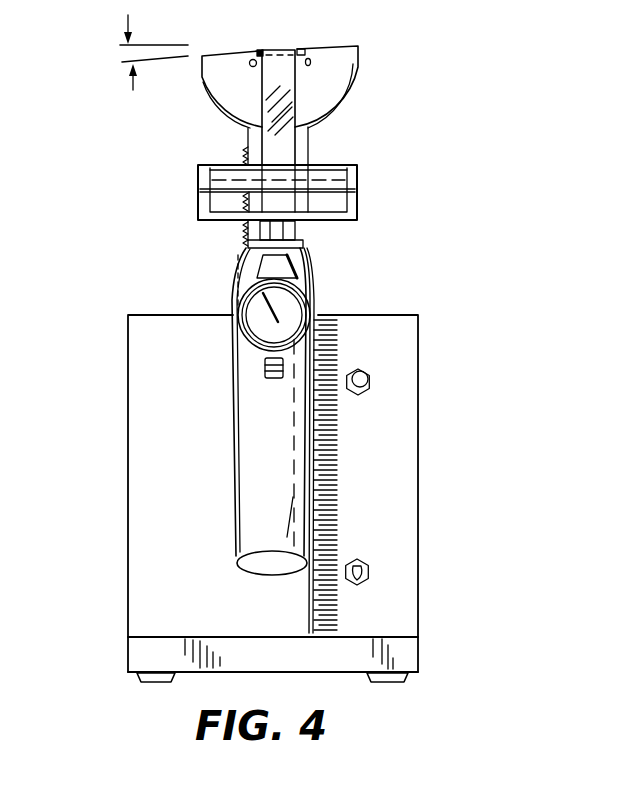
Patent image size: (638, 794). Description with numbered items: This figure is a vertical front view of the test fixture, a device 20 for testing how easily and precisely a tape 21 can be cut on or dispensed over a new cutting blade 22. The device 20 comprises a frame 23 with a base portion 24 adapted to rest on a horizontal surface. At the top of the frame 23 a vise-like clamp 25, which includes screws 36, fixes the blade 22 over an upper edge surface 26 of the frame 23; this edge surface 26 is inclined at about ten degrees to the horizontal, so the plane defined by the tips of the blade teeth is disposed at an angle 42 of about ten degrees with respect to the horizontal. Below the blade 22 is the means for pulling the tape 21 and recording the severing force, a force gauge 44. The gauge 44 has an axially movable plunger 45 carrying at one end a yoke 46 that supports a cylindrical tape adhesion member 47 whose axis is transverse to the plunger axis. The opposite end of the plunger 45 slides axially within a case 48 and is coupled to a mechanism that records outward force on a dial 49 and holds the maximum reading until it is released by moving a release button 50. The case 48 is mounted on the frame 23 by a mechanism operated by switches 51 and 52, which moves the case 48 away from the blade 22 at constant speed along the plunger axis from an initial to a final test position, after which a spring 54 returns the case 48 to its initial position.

The device 20 is at (416, 294).
The tape 21 is at (286, 141).
The cutting blade 22 is at (306, 50).
The frame 23 is at (120, 520).
The base portion 24 is at (136, 652).
The vise-like clamp 25 is at (269, 44).
The upper edge surface 26 is at (228, 52).
The screws 36 is at (250, 66).
The angle 42 is at (120, 54).
The force gauge 44 is at (225, 437).
The plunger 45 is at (284, 239).
The yoke 46 is at (358, 207).
The tape adhesion member 47 is at (338, 172).
The case 48 is at (278, 461).
The dial 49 is at (242, 304).
The release button 50 is at (265, 366).
The switch 51 is at (368, 384).
The switch 52 is at (363, 578).
The spring 54 is at (243, 235).